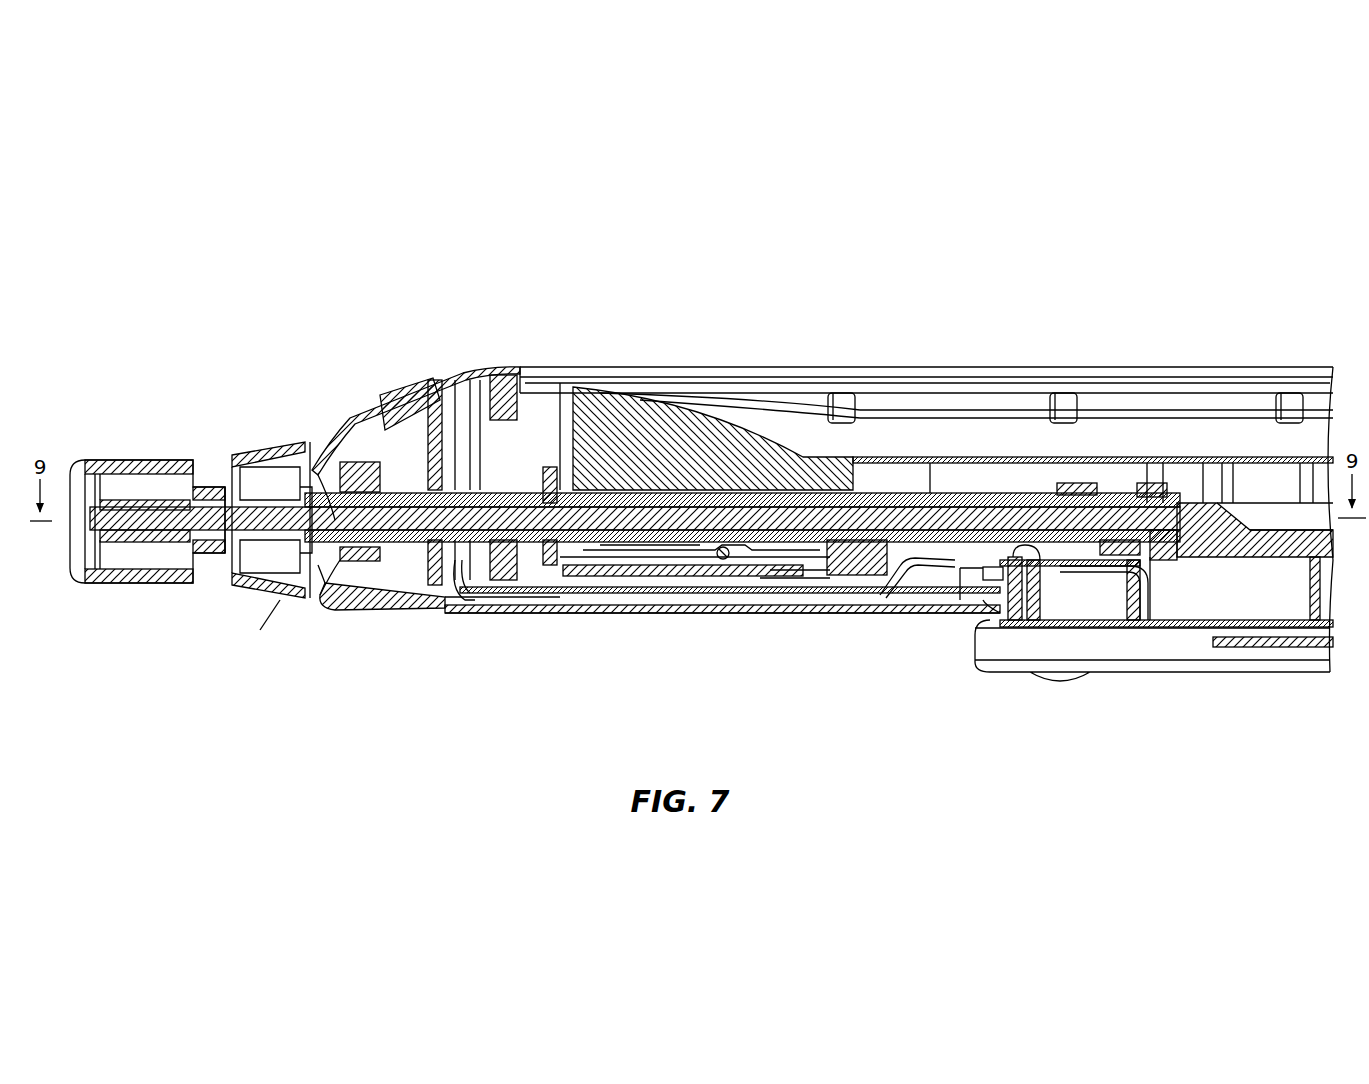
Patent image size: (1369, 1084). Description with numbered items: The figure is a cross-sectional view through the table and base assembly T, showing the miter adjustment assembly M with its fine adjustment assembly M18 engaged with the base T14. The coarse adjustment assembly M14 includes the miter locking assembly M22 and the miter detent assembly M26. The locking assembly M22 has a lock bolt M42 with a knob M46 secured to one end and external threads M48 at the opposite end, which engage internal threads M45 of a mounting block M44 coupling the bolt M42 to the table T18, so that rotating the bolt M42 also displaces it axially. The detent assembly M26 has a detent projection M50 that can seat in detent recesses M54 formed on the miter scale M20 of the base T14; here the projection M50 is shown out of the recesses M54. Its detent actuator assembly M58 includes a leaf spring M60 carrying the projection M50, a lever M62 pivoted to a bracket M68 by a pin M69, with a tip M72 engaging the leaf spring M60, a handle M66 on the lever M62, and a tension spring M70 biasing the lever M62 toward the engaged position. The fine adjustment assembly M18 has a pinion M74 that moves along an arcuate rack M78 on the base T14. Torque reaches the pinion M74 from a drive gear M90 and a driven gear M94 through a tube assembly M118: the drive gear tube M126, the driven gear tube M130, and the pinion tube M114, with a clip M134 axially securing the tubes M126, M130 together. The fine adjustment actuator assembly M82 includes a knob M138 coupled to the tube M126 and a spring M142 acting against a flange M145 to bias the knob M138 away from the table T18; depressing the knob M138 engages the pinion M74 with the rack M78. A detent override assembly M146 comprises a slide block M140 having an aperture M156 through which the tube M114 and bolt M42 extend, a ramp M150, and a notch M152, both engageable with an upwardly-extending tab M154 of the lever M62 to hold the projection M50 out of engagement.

The knob M46 is at (130, 584).
The miter locking assembly M22 is at (145, 424).
The knob M138 is at (252, 450).
The handle M66 is at (342, 560).
The clip M134 is at (428, 392).
The drive gear M90 is at (472, 420).
The radially-extending flange M145 is at (338, 456).
The table T18 is at (505, 362).
The aperture M156 is at (706, 480).
The driven gear M94 is at (556, 468).
The tube assembly M118 is at (955, 492).
The pinion tube M114 is at (912, 515).
The detent override assembly M146 is at (858, 480).
The lock bolt M42 is at (937, 480).
The tip M72 is at (975, 535).
The detent recesses M54 is at (1050, 555).
The pinion M74 is at (1126, 476).
The fine adjustment assembly M18 is at (1150, 500).
The mounting block M44 is at (1165, 545).
The internal threads M45 is at (1195, 528).
The bracket M68 is at (597, 575).
The lever M62 is at (655, 560).
The slide block M140 is at (627, 548).
The detent actuator assembly M58 is at (720, 656).
The pin M69 is at (710, 556).
The spring M70 is at (770, 572).
The notch M152 is at (830, 568).
The tab M154 is at (850, 585).
The ramp M150 is at (862, 612).
The coarse adjustment assembly M14 is at (872, 630).
The leaf spring M60 is at (936, 603).
The detent projection M50 is at (963, 583).
The miter detent assembly M26 is at (995, 593).
The miter scale M20 is at (1066, 567).
The rack M78 is at (1153, 556).
The external threads M48 is at (1152, 562).
The base T14 is at (1236, 678).
The drive gear tube M126 is at (320, 605).
The fine adjustment actuator assembly M82 is at (253, 630).
The miter adjustment assembly M is at (160, 665).
The table and base assembly T is at (1122, 238).
The spring M142 is at (456, 562).
The driven gear tube M130 is at (505, 560).